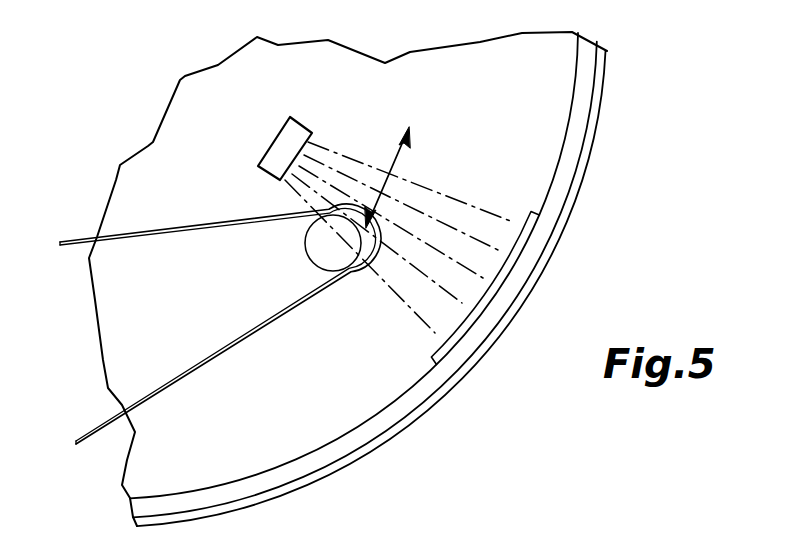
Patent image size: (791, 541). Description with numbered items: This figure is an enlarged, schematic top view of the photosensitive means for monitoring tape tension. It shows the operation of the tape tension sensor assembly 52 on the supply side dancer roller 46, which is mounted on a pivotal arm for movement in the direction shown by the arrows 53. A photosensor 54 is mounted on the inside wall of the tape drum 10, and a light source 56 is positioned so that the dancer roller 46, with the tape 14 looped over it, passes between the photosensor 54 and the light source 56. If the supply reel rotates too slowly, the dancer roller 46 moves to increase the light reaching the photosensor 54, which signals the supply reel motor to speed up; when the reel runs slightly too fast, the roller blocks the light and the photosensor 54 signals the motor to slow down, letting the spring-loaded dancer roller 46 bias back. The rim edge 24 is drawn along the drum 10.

The tape drum 10 is at (508, 89).
The tape 14 is at (198, 368).
The rim edge 24 is at (347, 455).
The dancer roller 46 is at (317, 248).
The tape tension sensor assembly 52 is at (418, 83).
The arrows 53 is at (398, 182).
The photosensor 54 is at (457, 330).
The light source 56 is at (290, 133).